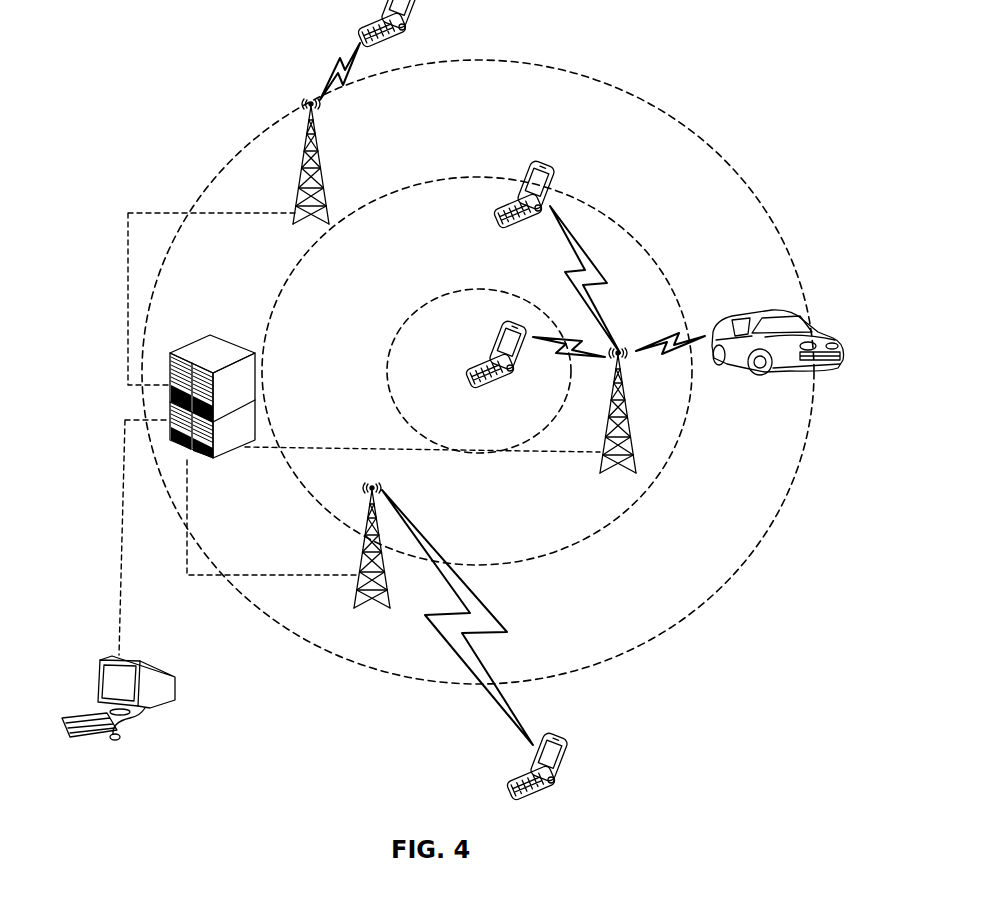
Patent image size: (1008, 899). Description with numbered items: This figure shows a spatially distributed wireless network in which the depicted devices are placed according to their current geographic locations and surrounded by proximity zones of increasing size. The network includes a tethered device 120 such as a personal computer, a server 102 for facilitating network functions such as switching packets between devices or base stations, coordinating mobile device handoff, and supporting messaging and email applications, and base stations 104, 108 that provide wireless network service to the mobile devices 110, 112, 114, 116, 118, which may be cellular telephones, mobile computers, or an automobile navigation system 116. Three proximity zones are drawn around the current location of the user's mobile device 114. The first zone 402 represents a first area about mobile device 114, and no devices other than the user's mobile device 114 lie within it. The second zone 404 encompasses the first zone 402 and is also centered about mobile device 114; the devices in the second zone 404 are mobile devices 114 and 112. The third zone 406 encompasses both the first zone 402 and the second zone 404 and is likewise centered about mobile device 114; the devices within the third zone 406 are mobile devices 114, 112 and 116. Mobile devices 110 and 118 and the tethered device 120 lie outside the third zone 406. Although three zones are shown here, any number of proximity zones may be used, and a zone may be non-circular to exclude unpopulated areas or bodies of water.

The server 102 is at (255, 382).
The base station 104 is at (325, 196).
The base station 108 is at (603, 457).
The mobile device 110 is at (413, 7).
The mobile device 112 is at (552, 184).
The mobile device 114 is at (484, 338).
The mobile device 116 is at (748, 308).
The mobile device 118 is at (566, 753).
The tethered device 120 is at (177, 693).
The first zone 402 is at (474, 286).
The second zone 404 is at (443, 172).
The third zone 406 is at (571, 68).